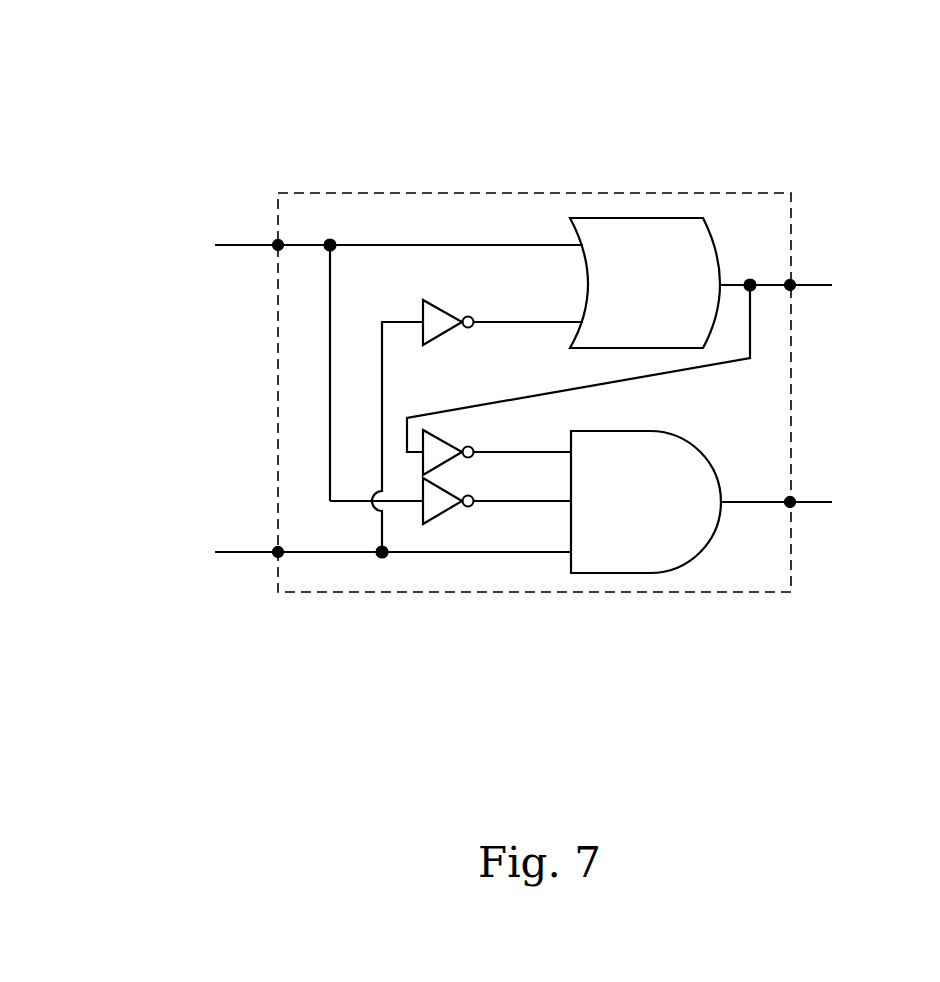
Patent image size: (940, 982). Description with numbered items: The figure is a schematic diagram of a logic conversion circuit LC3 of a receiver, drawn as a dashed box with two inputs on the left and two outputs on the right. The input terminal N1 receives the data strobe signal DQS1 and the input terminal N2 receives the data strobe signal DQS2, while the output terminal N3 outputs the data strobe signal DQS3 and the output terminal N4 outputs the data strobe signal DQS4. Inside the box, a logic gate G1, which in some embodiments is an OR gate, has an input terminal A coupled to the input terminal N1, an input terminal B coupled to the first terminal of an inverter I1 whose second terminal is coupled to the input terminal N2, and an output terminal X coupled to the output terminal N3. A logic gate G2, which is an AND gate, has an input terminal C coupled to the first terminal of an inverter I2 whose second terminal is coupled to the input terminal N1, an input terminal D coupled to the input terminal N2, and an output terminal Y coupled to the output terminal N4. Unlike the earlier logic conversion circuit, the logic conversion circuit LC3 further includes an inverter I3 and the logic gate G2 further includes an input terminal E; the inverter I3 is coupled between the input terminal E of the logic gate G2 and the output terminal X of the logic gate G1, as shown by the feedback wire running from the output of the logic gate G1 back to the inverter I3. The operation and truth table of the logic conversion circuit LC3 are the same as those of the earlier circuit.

The logic conversion circuit LC3 is at (843, 121).
The logic gate G1 is at (638, 218).
The logic gate G2 is at (625, 576).
The inverter I1 is at (445, 338).
The inverter I2 is at (445, 516).
The inverter I3 is at (443, 446).
The input terminal N1 is at (278, 247).
The input terminal N2 is at (278, 555).
The output terminal N3 is at (793, 289).
The output terminal N4 is at (793, 506).
The data strobe signal DQS1 is at (361, 246).
The data strobe signal DQS2 is at (355, 549).
The data strobe signal DQS3 is at (808, 285).
The data strobe signal DQS4 is at (808, 503).